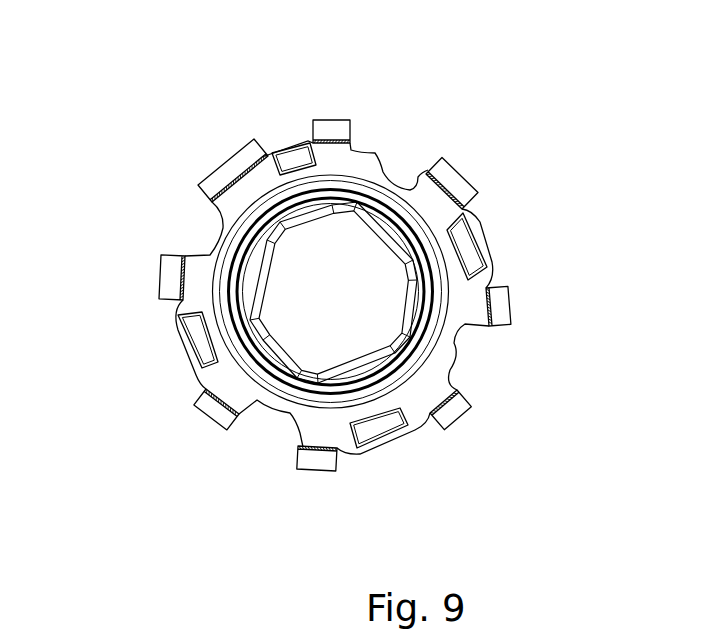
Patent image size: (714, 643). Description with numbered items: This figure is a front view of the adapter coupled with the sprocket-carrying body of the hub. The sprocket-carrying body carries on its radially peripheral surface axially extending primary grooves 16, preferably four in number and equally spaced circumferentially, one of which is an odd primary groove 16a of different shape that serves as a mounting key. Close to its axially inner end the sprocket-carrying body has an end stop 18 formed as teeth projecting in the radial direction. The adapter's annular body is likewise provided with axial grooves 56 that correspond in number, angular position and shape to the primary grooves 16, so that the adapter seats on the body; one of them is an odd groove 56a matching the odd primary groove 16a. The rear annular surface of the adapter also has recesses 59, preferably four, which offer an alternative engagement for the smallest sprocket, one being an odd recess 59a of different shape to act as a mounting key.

The primary grooves 16 is at (325, 352).
The odd primary groove 16a is at (450, 142).
The end stop 18 is at (322, 120).
The grooves 56 is at (214, 243).
The odd groove 56a is at (384, 164).
The recesses 59 is at (468, 250).
The odd recess 59a is at (296, 160).